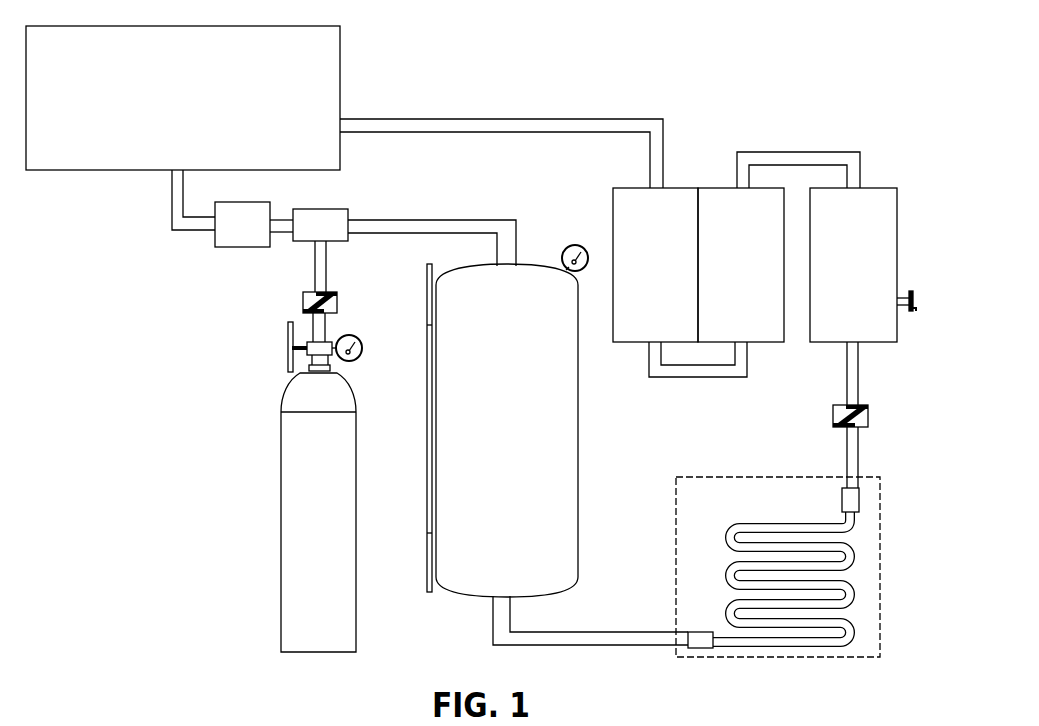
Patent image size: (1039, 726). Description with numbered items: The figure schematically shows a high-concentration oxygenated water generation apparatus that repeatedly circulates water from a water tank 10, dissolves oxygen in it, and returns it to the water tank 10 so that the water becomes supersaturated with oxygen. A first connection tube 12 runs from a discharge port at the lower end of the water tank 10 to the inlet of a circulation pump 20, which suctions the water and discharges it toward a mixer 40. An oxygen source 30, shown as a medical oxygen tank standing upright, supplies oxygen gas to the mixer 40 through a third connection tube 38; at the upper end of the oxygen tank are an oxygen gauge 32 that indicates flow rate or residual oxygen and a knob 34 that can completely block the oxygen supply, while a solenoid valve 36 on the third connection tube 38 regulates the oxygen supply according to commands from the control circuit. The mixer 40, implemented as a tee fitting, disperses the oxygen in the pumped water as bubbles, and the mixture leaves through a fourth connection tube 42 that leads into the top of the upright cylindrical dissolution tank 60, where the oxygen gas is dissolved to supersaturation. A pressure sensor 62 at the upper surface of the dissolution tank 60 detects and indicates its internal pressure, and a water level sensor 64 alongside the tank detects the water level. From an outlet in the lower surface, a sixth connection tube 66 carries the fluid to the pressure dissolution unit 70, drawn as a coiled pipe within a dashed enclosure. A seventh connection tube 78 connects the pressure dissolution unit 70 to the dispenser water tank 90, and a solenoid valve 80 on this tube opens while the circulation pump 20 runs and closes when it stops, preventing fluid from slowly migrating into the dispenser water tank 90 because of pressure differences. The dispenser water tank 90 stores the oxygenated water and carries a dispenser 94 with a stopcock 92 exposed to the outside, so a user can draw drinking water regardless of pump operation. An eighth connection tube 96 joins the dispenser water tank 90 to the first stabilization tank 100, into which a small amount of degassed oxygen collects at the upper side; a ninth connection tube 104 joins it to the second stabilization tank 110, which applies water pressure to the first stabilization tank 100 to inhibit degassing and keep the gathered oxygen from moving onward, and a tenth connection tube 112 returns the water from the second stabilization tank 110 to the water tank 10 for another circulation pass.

The water tank 10 is at (339, 63).
The first connection tube 12 is at (171, 207).
The circulation pump 20 is at (233, 248).
The oxygen source 30 is at (281, 540).
The oxygen gauge 32 is at (358, 361).
The knob 34 is at (288, 338).
The solenoid valve 36 is at (338, 302).
The third connection tube 38 is at (313, 266).
The mixer 40 is at (347, 210).
The fourth connection tube 42 is at (434, 219).
The dissolution tank 60 is at (578, 438).
The pressure sensor 62 is at (578, 246).
The water level sensor 64 is at (423, 455).
The sixth connection tube 66 is at (612, 632).
The pressure dissolution unit 70 is at (880, 530).
The seventh connection tube 78 is at (858, 447).
The solenoid valve 80 is at (868, 417).
The dispenser water tank 90 is at (872, 197).
The stopcock 92 is at (912, 292).
The dispenser 94 is at (913, 311).
The eighth connection tube 96 is at (800, 152).
The first stabilization tank 100 is at (730, 198).
The ninth connection tube 104 is at (700, 377).
The second stabilization tank 110 is at (670, 196).
The tenth connection tube 112 is at (576, 118).